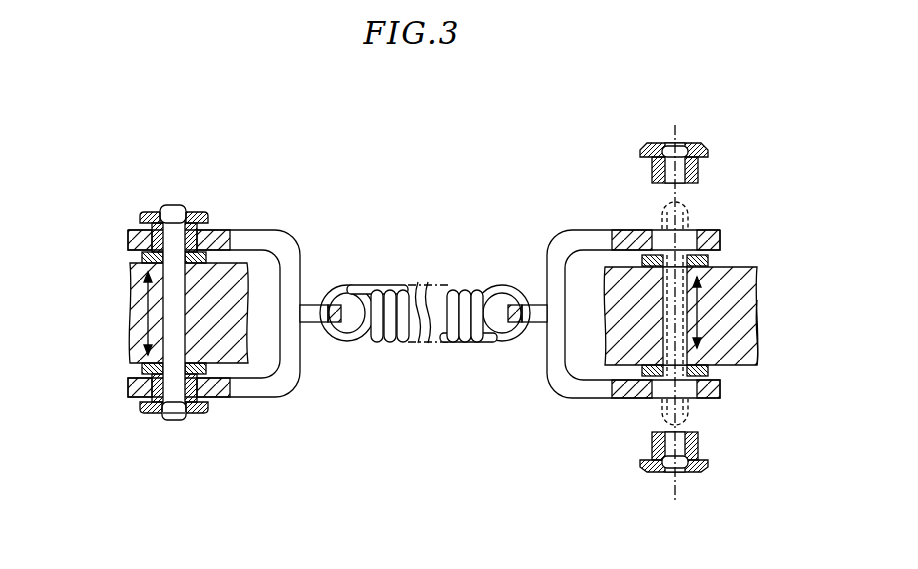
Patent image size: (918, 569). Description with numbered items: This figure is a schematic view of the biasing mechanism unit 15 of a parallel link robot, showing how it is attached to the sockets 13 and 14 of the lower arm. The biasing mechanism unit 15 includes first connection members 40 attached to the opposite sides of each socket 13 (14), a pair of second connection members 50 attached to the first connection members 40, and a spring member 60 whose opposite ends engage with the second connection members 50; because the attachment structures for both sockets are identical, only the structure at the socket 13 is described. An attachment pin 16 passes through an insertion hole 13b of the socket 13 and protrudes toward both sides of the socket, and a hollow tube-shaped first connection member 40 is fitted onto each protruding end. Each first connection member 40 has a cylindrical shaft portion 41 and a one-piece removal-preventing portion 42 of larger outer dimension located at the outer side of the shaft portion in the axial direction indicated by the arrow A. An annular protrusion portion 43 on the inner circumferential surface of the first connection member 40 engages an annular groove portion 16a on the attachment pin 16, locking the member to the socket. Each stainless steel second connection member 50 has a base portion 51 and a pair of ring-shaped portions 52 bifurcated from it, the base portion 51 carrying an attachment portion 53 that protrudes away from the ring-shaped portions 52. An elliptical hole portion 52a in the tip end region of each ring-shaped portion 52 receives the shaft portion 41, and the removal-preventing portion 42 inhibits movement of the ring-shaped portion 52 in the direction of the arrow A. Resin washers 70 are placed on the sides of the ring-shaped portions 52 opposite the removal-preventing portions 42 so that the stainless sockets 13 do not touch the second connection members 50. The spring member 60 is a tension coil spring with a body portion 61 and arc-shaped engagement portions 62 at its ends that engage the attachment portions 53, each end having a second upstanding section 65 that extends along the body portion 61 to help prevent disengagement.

The socket 13 is at (426, 298).
The insertion hole 13b is at (742, 358).
The socket 14 is at (426, 282).
The biasing mechanism unit 15 is at (426, 316).
The attachment pin 16 is at (173, 205).
The annular groove portion 16a is at (185, 210).
The first connection member 40 is at (413, 316).
The cylindrical shaft portion 41 is at (135, 238).
The removal-preventing portion 42 is at (148, 213).
The annular protrusion portion 43 is at (168, 206).
The second connection member 50 is at (424, 325).
The base portion 51 is at (303, 368).
The ring-shaped portion 52 is at (424, 331).
The elliptical hole portion 52a is at (207, 233).
The attachment portion 53 is at (310, 310).
The spring member 60 is at (425, 303).
The body portion 61 is at (400, 342).
The engagement portion 62 is at (346, 350).
The second upstanding section 65 is at (380, 286).
The washer 70 is at (142, 257).
The arrow indicating axial direction A is at (140, 300).